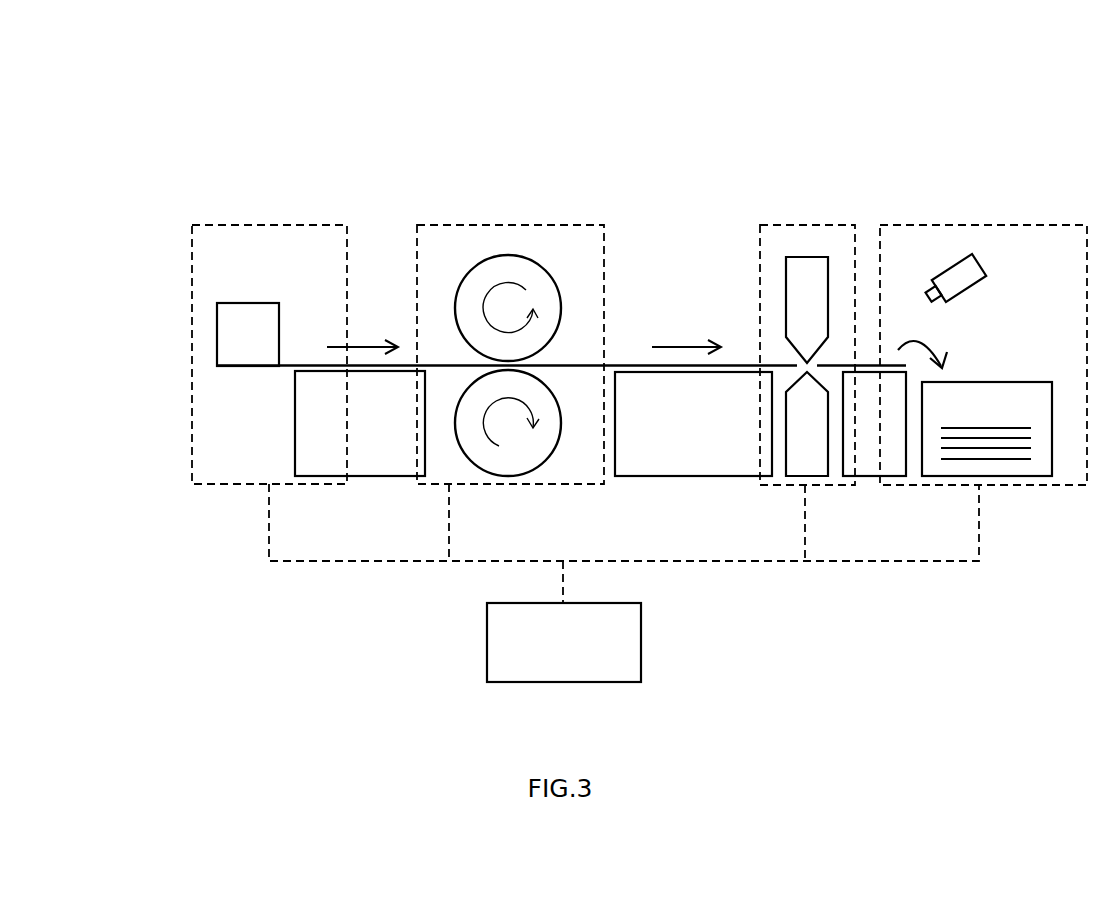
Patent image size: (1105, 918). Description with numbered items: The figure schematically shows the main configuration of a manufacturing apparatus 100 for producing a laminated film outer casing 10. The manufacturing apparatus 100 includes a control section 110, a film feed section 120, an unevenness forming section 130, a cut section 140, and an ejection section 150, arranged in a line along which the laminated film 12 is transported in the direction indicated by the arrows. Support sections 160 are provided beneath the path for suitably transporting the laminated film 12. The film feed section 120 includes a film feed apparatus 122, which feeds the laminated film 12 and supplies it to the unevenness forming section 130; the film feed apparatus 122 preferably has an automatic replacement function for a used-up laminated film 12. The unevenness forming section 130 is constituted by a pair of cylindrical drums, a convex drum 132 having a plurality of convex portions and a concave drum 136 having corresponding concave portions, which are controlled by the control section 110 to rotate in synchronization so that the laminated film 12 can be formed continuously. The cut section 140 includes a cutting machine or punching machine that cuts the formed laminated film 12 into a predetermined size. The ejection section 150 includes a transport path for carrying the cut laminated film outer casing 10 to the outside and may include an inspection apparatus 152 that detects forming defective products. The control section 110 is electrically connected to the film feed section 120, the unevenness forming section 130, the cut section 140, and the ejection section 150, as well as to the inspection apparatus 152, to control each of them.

The manufacturing apparatus 100 is at (121, 90).
The laminated film outer casing 10 is at (1015, 478).
The laminated film 12 is at (626, 364).
The control section 110 is at (603, 684).
The film feed section 120 is at (314, 225).
The film feed apparatus 122 is at (217, 338).
The unevenness forming section 130 is at (442, 225).
The convex drum 132 is at (528, 255).
The concave drum 136 is at (520, 478).
The cut section 140 is at (795, 225).
The ejection section 150 is at (1005, 225).
The inspection apparatus 152 is at (986, 268).
The support section 160 is at (380, 478).